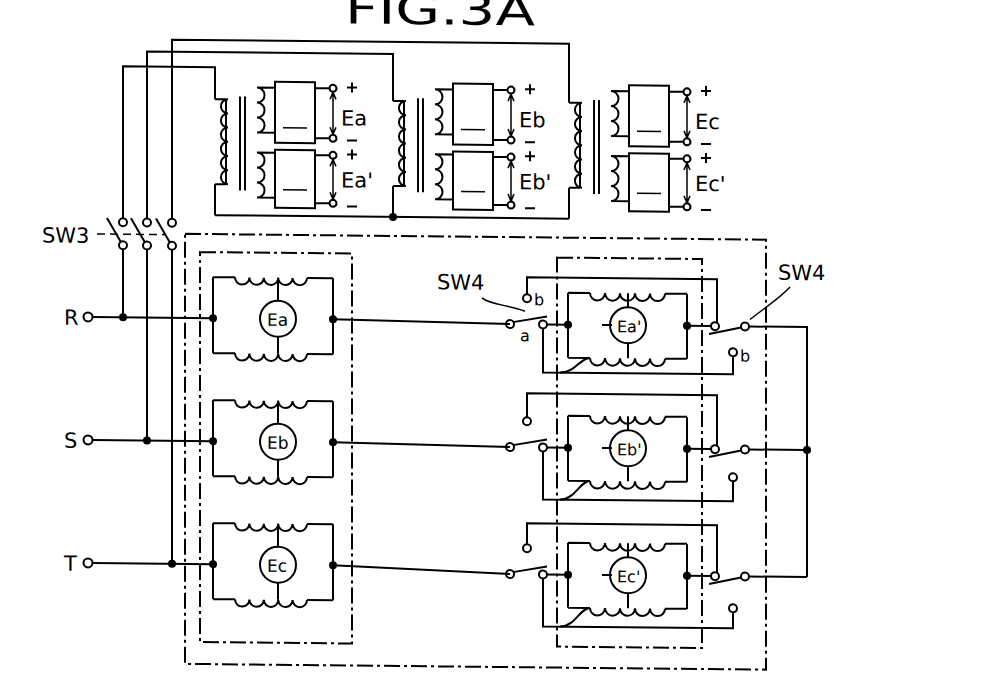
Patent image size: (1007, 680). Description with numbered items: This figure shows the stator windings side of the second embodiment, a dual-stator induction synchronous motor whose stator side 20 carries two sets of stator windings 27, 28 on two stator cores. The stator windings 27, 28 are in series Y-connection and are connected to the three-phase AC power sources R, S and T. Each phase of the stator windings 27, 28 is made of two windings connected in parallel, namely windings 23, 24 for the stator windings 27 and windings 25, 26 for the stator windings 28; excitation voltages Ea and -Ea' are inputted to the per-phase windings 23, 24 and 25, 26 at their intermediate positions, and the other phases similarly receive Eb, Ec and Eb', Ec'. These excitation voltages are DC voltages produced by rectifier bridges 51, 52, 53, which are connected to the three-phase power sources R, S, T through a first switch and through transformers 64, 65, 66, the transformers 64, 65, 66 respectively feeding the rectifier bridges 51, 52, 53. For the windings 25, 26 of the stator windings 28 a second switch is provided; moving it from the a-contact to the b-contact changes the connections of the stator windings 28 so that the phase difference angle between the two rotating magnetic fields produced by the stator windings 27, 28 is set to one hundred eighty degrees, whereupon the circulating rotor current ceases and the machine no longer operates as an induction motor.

The stator side 20 is at (767, 645).
The winding 23 is at (307, 273).
The winding 24 is at (299, 360).
The winding 25 is at (664, 287).
The winding 26 is at (557, 362).
The stator windings 27 is at (352, 587).
The stator windings 28 is at (548, 628).
The rectifier bridge 51 is at (316, 145).
The rectifier bridge 52 is at (494, 147).
The rectifier bridge 53 is at (670, 148).
The transformer 64 is at (244, 95).
The transformer 65 is at (420, 90).
The transformer 66 is at (598, 91).